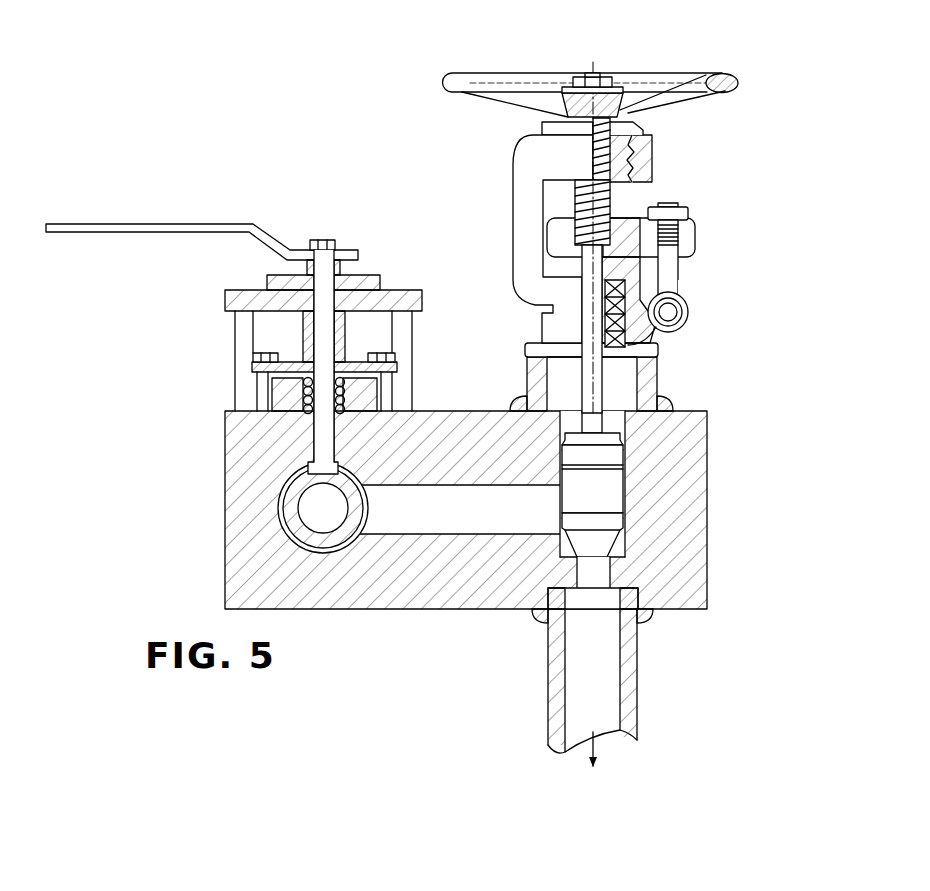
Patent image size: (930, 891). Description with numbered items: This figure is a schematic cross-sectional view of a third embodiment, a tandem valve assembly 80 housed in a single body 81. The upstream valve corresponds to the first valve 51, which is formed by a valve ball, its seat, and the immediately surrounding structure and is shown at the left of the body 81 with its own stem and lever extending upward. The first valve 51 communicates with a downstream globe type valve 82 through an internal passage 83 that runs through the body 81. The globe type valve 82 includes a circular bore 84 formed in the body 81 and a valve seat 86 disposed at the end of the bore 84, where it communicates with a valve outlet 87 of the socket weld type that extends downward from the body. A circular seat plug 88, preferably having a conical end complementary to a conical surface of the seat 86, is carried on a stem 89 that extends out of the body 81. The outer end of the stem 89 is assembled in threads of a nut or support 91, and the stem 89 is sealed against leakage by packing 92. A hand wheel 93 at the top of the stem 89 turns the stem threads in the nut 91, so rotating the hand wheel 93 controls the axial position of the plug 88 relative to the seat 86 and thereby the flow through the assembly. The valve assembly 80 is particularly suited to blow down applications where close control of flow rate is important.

The first valve 51 is at (278, 494).
The tandem valve assembly 80 is at (196, 531).
The body 81 is at (225, 585).
The globe type valve 82 is at (628, 487).
The internal passage 83 is at (430, 534).
The circular bore 84 is at (614, 462).
The valve seat 86 is at (611, 534).
The valve outlet 87 is at (607, 573).
The circular seat plug 88 is at (568, 543).
The stem 89 is at (598, 422).
The nut or support 91 is at (618, 157).
The packing 92 is at (627, 297).
The hand wheel 93 is at (740, 84).